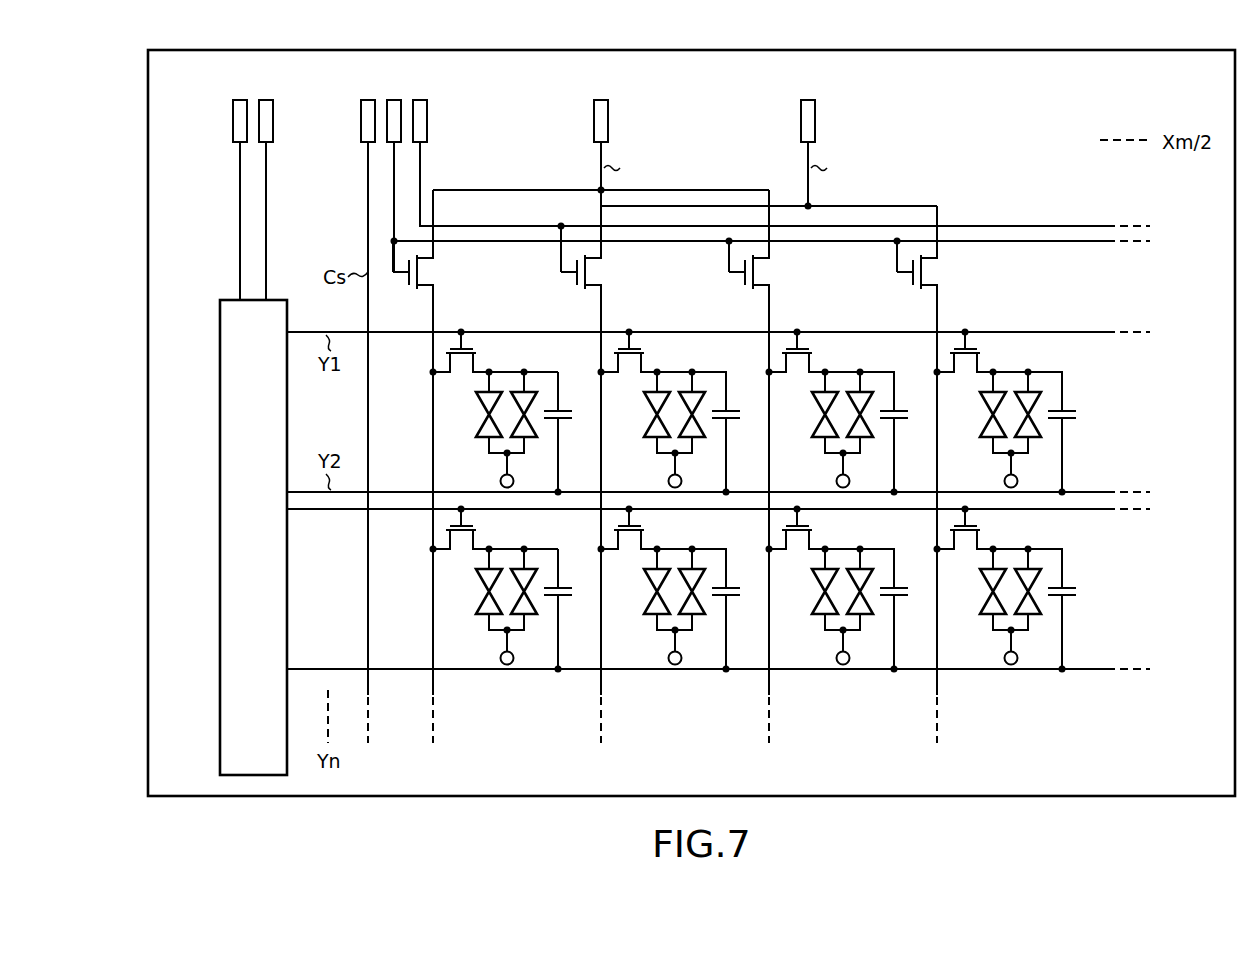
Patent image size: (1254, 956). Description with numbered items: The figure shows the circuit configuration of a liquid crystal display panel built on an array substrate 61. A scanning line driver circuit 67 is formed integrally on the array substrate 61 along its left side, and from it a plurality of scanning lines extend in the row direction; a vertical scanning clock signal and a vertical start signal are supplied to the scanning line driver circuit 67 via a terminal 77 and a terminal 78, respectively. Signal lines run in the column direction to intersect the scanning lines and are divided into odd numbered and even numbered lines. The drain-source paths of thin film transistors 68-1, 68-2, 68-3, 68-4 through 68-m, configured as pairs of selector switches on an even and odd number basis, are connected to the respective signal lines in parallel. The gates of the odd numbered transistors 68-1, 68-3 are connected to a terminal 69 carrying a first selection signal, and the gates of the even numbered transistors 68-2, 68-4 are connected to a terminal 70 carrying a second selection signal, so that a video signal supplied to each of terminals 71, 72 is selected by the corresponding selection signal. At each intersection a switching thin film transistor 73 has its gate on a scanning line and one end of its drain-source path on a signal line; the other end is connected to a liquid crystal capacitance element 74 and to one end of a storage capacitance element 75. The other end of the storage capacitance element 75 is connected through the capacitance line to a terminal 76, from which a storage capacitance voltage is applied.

The array substrate 61 is at (1000, 798).
The scanning line driver circuit 67 is at (222, 300).
The thin film transistor 68-1 is at (436, 272).
The thin film transistor 68-2 is at (604, 272).
The thin film transistor 68-3 is at (772, 272).
The thin film transistor 68-4 is at (940, 272).
The thin film transistor 68-m is at (1159, 246).
The terminal 69 is at (394, 98).
The terminal 70 is at (420, 98).
The terminal 71 is at (612, 122).
The terminal 72 is at (819, 122).
The switching thin film transistor 73 is at (478, 349).
The liquid crystal capacitance element 74 is at (476, 412).
The storage capacitance element 75 is at (560, 412).
The terminal 76 is at (368, 98).
The terminal 77 is at (240, 98).
The terminal 78 is at (266, 98).